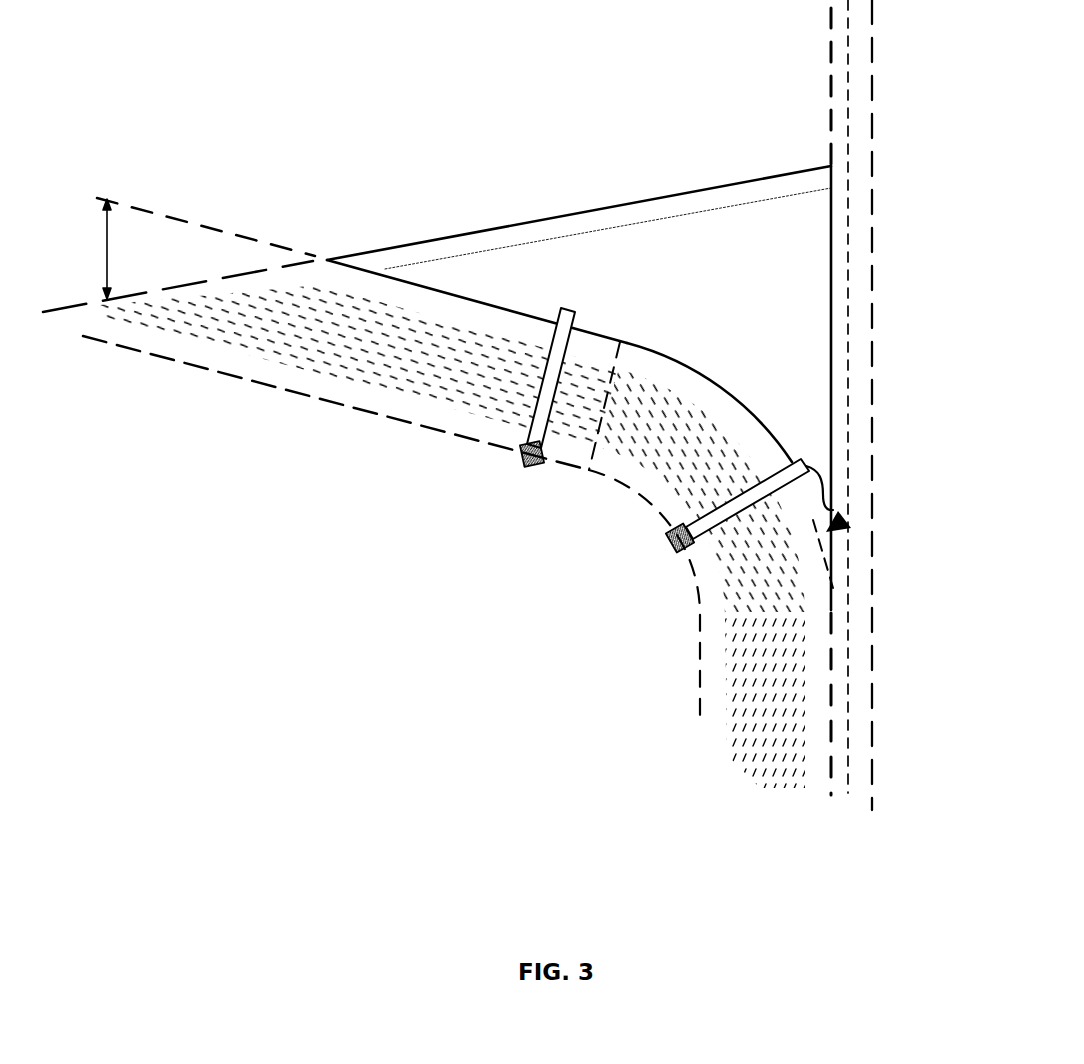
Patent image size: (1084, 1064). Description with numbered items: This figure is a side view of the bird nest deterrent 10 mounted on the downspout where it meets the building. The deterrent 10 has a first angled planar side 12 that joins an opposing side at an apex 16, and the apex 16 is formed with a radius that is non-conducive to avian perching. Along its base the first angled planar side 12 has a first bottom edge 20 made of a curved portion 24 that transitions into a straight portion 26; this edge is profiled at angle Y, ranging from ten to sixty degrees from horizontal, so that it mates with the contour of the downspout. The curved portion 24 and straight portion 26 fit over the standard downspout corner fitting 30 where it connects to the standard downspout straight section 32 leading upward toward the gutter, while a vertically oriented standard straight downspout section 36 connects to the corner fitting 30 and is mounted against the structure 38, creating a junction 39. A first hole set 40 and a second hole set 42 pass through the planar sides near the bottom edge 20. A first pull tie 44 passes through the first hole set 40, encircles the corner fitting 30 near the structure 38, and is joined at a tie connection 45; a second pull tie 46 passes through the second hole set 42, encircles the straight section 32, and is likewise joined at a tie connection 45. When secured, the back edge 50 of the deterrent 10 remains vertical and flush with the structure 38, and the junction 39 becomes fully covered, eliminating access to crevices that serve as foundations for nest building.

The nesting deterrent 10 is at (358, 129).
The first angled planar side 12 is at (783, 323).
The apex 16 is at (674, 194).
The first bottom edge 20 is at (789, 323).
The curved portion 24 is at (763, 422).
The straight portion 26 is at (441, 290).
The standard downspout corner fitting 30 is at (808, 590).
The standard downspout straight section 32 is at (262, 360).
The vertically oriented standard straight downspout section 36 is at (812, 702).
The structure 38 is at (843, 37).
The junction 39 is at (845, 521).
The first hole set 40 is at (818, 470).
The second hole set 42 is at (567, 310).
The first pull tie 44 is at (738, 507).
The tie connection 45 is at (530, 455).
The second pull tie 46 is at (527, 433).
The back edge 50 is at (833, 288).